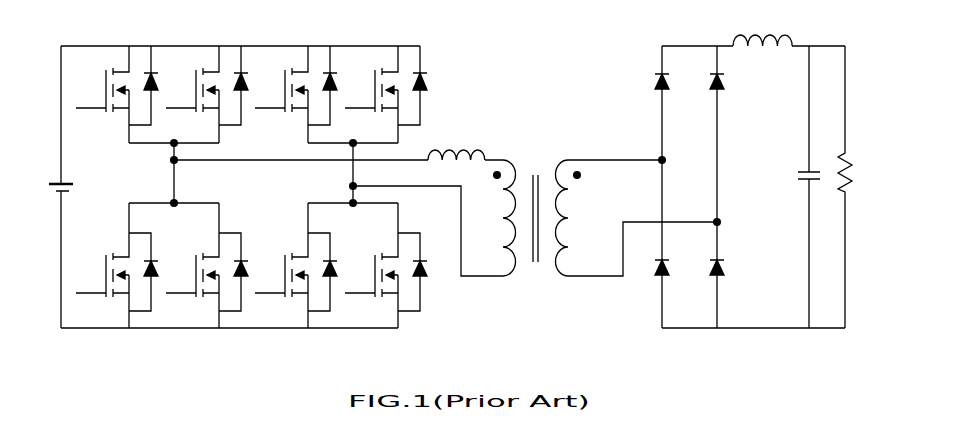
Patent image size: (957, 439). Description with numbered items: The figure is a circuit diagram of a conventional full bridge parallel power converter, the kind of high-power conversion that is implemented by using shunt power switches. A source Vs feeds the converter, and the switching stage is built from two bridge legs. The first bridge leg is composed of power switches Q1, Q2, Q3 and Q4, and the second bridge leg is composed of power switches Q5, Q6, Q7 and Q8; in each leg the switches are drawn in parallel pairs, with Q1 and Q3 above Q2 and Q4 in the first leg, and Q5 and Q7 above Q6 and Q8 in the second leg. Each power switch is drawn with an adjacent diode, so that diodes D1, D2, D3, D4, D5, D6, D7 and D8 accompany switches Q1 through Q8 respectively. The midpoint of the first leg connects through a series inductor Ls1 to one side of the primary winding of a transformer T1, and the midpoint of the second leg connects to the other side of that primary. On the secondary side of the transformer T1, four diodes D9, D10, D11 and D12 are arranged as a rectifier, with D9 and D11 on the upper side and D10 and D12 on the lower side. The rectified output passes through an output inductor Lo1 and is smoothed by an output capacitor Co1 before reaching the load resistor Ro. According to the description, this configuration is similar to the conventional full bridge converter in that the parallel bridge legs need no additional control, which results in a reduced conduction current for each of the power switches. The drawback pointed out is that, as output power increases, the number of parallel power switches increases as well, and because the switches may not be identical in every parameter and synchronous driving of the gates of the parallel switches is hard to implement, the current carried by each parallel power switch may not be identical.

The DC input voltage source Vs is at (50, 187).
The power switch Q1 is at (102, 94).
The power switch Q2 is at (102, 265).
The power switch Q3 is at (192, 94).
The power switch Q4 is at (192, 265).
The power switch Q5 is at (281, 94).
The power switch Q6 is at (281, 265).
The power switch Q7 is at (371, 94).
The power switch Q8 is at (371, 265).
The diode D1 is at (156, 85).
The diode D2 is at (156, 272).
The diode D3 is at (246, 85).
The diode D4 is at (246, 272).
The diode D5 is at (335, 85).
The diode D6 is at (335, 272).
The diode D7 is at (425, 85).
The diode D8 is at (425, 272).
The rectifier diode D9 is at (675, 103).
The rectifier diode D10 is at (680, 244).
The rectifier diode D11 is at (735, 134).
The rectifier diode D12 is at (735, 275).
The series inductor Ls1 is at (465, 144).
The transformer T1 is at (537, 202).
The output inductor Lo1 is at (762, 29).
The output capacitor Co1 is at (790, 187).
The load resistor Ro is at (859, 187).